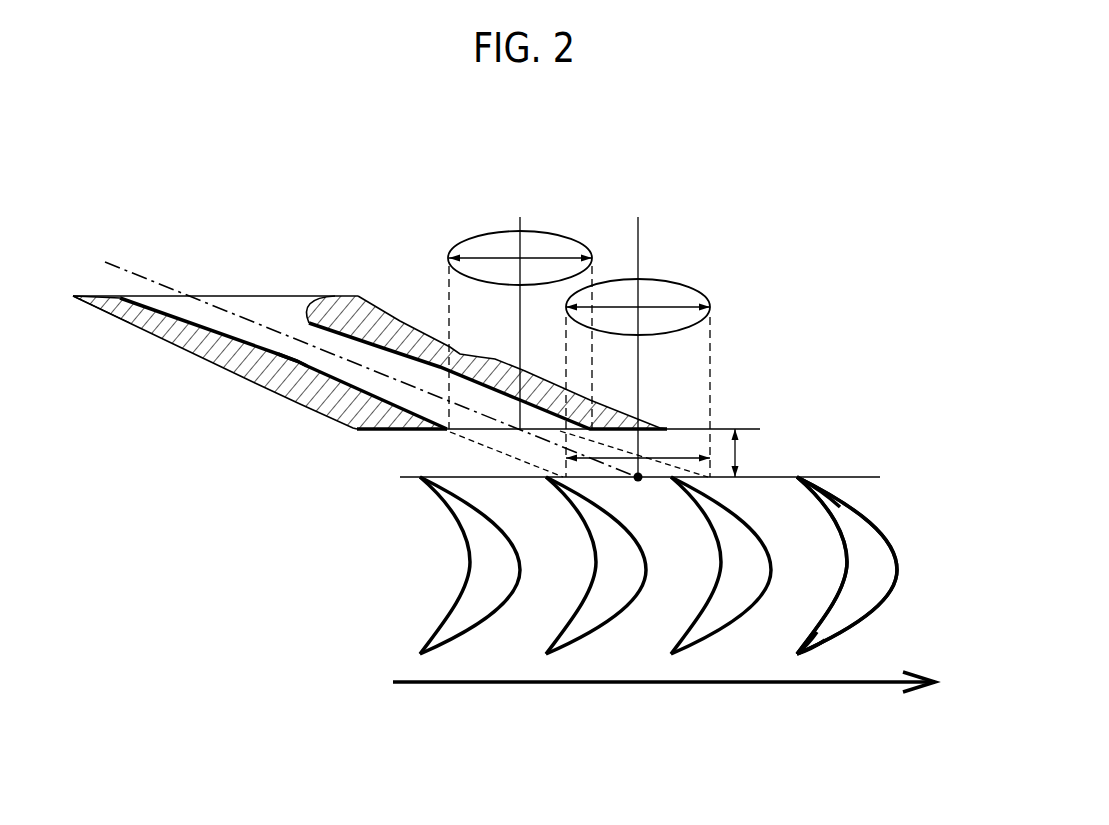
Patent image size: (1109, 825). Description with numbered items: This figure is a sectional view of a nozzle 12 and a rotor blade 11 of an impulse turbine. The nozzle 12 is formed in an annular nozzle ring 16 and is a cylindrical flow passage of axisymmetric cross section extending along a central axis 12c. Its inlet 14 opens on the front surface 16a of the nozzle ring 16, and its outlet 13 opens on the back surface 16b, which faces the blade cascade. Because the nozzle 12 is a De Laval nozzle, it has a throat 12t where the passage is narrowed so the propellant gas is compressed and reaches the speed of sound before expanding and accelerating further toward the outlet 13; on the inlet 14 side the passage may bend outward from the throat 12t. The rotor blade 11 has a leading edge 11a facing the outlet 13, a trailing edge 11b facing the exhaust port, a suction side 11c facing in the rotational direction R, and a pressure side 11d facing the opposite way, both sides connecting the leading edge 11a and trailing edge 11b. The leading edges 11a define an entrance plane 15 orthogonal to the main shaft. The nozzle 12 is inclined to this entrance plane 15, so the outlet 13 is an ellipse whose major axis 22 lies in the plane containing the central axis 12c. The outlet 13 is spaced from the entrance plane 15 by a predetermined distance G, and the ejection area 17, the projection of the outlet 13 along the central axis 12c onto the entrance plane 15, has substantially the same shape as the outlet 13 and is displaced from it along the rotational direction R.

The rotor blade 11 is at (473, 615).
The leading edge 11a is at (797, 477).
The trailing edge 11b is at (797, 654).
The suction side 11c is at (897, 578).
The pressure side 11d is at (842, 553).
The nozzle 12 is at (216, 283).
The central axis 12c is at (378, 375).
The throat 12t is at (305, 348).
The outlet 13 is at (481, 233).
The inlet 14 is at (280, 296).
The entrance plane 15 is at (778, 477).
The nozzle ring 16 is at (213, 345).
The front surface 16a is at (93, 295).
The back surface 16b is at (368, 431).
The ejection area 17 is at (694, 289).
The major axis 22 is at (562, 257).
The predetermined distance G is at (740, 447).
The rotational direction R is at (663, 683).